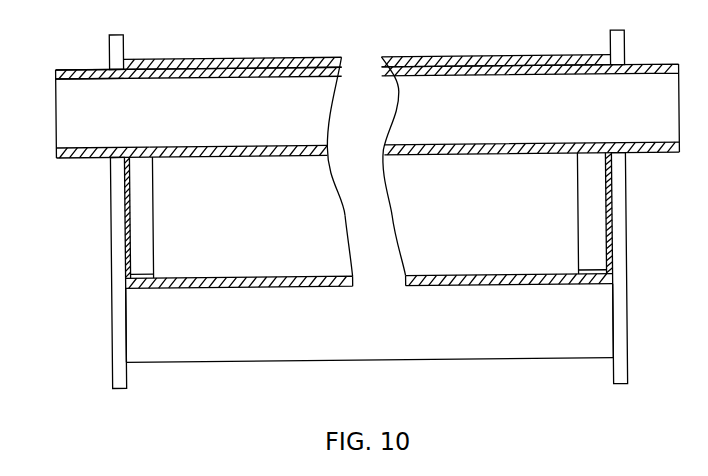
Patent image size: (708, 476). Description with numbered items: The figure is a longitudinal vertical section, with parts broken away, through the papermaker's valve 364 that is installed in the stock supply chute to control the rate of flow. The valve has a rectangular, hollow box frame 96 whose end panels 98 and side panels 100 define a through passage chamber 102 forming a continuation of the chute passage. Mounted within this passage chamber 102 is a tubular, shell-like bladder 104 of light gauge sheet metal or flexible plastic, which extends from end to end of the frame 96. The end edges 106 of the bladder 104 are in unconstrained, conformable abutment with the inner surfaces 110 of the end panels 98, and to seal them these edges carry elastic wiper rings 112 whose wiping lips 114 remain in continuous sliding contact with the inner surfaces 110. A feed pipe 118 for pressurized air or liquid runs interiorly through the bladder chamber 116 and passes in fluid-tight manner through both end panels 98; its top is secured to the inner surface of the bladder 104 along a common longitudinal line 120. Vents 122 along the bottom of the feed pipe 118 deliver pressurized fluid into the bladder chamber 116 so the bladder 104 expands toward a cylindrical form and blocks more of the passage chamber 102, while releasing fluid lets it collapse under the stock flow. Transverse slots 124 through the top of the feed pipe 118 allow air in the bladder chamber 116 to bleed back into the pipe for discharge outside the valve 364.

The papermaker's valve 364 is at (77, 70).
The transverse slots 124 is at (200, 72).
The bladder 104 is at (325, 57).
The common longitudinal line 120 is at (465, 60).
The feed pipe 118 is at (78, 160).
The vents 122 is at (203, 157).
The end panels 98 is at (110, 227).
The box frame 96 is at (627, 247).
The inner surfaces 110 is at (612, 217).
The elastic wiper rings 112 is at (132, 160).
The wiping lips 114 is at (130, 273).
The bladder chamber 116 is at (453, 213).
The end edges 106 is at (610, 277).
The passage chamber 102 is at (592, 317).
The side panels 100 is at (482, 360).